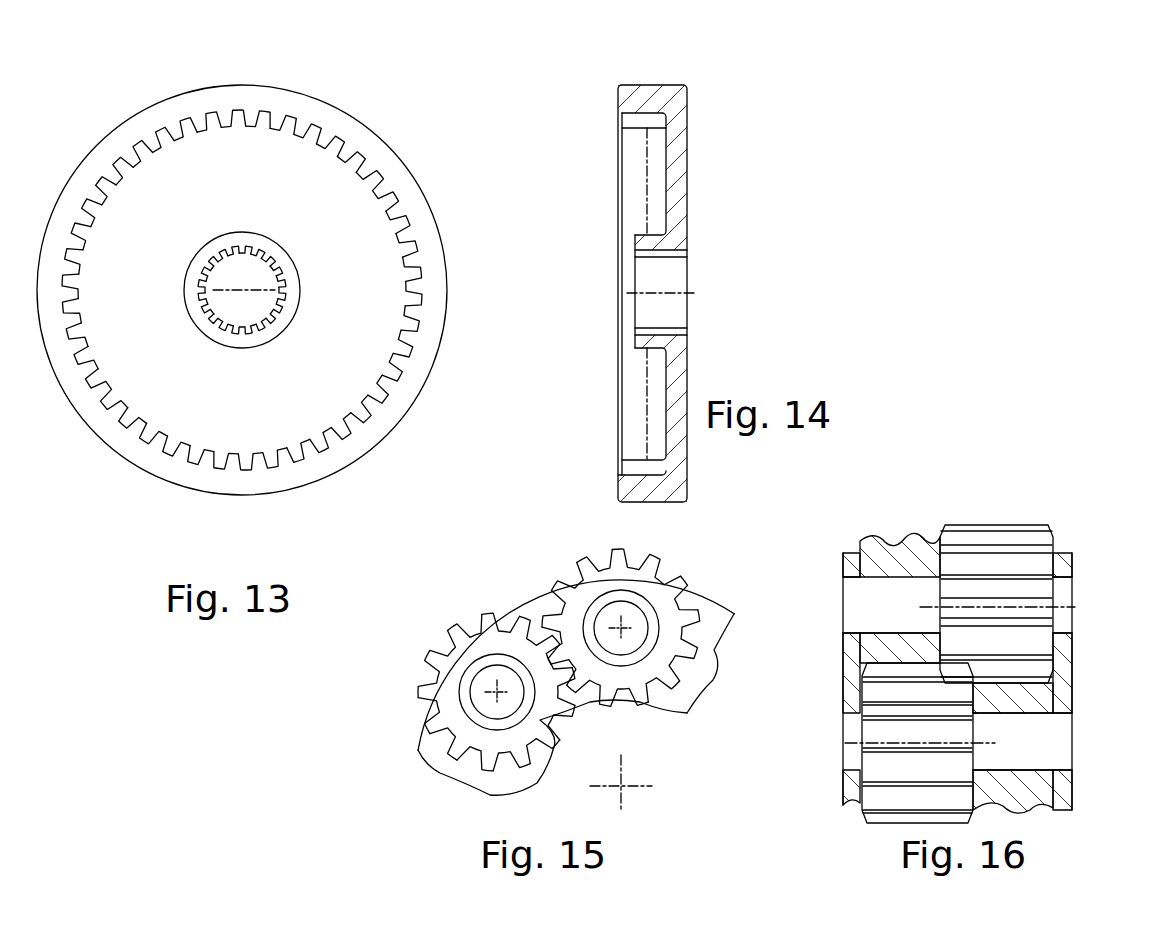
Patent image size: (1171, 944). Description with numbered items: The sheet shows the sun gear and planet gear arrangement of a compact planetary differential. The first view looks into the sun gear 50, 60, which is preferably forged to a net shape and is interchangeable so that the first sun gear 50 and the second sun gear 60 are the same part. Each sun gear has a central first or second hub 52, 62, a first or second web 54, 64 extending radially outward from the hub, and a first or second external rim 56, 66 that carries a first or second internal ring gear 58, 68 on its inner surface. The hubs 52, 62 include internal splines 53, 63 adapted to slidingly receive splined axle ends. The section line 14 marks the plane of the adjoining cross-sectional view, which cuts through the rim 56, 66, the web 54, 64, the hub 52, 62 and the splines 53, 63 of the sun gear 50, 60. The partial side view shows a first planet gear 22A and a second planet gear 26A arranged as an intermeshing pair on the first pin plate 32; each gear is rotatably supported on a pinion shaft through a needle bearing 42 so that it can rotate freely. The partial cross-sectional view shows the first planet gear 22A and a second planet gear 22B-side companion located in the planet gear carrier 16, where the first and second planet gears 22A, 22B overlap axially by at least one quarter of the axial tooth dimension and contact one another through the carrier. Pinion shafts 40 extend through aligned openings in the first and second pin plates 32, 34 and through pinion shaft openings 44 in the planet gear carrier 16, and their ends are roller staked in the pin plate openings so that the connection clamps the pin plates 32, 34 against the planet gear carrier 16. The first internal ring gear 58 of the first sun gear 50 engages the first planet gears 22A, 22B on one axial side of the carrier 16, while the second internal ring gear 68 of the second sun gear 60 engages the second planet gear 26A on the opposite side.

In FIG. 13, the section line 14- 14 is at (234, 520).
In FIG. 16, the planet gear carrier 16 is at (898, 547).
In FIG. 15, the first planet gear 22A is at (659, 561).
In FIG. 16, the first planet gear 22A is at (943, 526).
In FIG. 16, the first planet gear 22B is at (880, 725).
In FIG. 15, the second planet gear 26A is at (452, 628).
In FIG. 15, the first pin plate 32 is at (430, 748).
In FIG. 16, the first pin plate 32 is at (1060, 560).
In FIG. 16, the second pin plate 34 is at (852, 560).
In FIG. 16, the pinion shaft 40 is at (1060, 614).
In FIG. 15, the needle bearing 42 is at (505, 655).
In FIG. 15, the pinion shaft opening 44 is at (520, 703).
In FIG. 16, the pinion shaft opening 44 is at (882, 628).
In FIG. 13, the first sun gear 50 is at (242, 266).
In FIG. 13, the second sun gear 60 is at (321, 95).
In FIG. 13, the first hub 52 is at (338, 357).
In FIG. 14, the first hub 52 is at (725, 291).
In FIG. 13, the second hub 62 is at (257, 341).
In FIG. 14, the second hub 62 is at (665, 243).
In FIG. 13, the internal splines 53 is at (358, 343).
In FIG. 14, the internal splines 53 is at (600, 292).
In FIG. 13, the internal splines 63 is at (283, 310).
In FIG. 14, the internal splines 63 is at (629, 258).
In FIG. 13, the first web 54 is at (368, 481).
In FIG. 14, the first web 54 is at (740, 294).
In FIG. 13, the second web 64 is at (298, 422).
In FIG. 14, the second web 64 is at (672, 153).
In FIG. 14, the first external rim 56 is at (689, 269).
In FIG. 14, the second external rim 66 is at (647, 95).
In FIG. 13, the first internal ring gear 58 is at (274, 270).
In FIG. 14, the first internal ring gear 58 is at (585, 282).
In FIG. 13, the second internal ring gear 68 is at (330, 135).
In FIG. 14, the second internal ring gear 68 is at (636, 122).